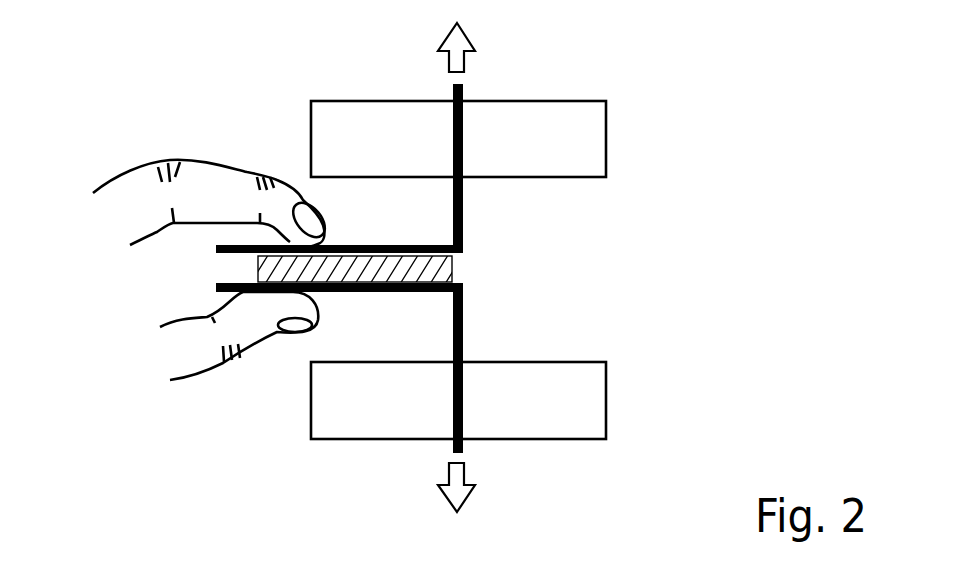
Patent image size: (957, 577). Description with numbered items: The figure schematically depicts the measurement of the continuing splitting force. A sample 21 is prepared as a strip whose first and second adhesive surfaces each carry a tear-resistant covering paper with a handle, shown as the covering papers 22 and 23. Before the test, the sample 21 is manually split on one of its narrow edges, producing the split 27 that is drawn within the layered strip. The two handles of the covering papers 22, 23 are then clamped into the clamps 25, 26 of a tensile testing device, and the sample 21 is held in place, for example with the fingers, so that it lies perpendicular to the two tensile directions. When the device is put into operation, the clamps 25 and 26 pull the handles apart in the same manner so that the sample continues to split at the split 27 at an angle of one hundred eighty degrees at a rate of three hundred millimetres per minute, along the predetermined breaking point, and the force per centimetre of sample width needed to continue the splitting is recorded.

The sample 21 is at (260, 265).
The covering paper 22 is at (463, 233).
The covering paper 23 is at (463, 302).
The clamp 25 is at (347, 137).
The clamp 26 is at (355, 395).
The split 27 is at (452, 270).